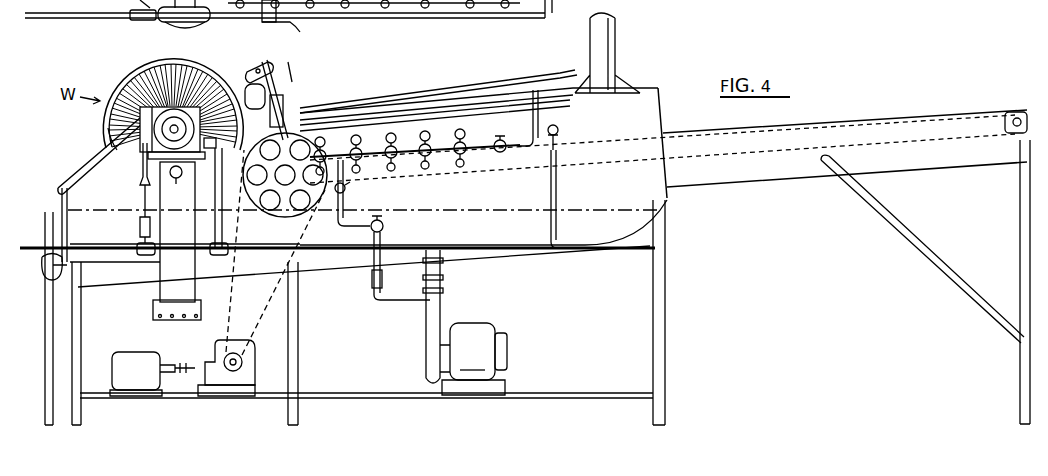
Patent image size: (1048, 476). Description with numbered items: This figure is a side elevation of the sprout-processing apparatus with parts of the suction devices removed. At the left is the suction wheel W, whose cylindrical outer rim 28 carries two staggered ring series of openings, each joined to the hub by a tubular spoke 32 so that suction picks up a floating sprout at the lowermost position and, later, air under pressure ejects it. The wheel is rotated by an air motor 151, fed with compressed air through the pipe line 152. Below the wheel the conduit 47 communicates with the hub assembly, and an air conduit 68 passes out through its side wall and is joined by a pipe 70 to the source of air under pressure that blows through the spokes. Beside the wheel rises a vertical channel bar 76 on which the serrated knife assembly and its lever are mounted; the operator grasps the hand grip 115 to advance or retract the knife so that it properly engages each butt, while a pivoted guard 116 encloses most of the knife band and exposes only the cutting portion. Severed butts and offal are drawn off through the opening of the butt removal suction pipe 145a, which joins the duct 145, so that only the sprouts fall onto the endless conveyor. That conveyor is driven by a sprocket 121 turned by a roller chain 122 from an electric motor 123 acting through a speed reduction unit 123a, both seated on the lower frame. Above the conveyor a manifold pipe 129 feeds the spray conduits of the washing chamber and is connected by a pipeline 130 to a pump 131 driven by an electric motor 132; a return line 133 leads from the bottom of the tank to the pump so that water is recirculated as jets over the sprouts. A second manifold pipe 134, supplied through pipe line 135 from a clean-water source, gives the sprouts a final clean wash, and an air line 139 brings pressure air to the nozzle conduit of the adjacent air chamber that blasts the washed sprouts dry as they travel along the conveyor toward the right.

The outer rim 28 is at (122, 76).
The tubular spoke 32 is at (105, 129).
The air motor 151 is at (148, 152).
The conduit 47 is at (185, 232).
The pipe line 152 is at (145, 195).
The conduit 68 is at (212, 143).
The channel bar 76 is at (272, 122).
The guard 116 is at (274, 61).
The stack / duct 145 is at (246, 80).
The hand grip 115 is at (304, 72).
The sprocket 121 is at (318, 110).
The butt removal suction pipe 145a is at (446, 68).
The pipe 70 is at (278, 175).
The manifold pipe 129 is at (348, 145).
The second manifold pipe 134 is at (445, 142).
The pipe line 135 is at (536, 92).
The air line 139 is at (556, 192).
The pipeline 130 is at (340, 212).
The return line 133 is at (444, 300).
The pump 131 is at (424, 348).
The electric motor 132 is at (488, 334).
The electric motor 123 is at (143, 360).
The speed reduction unit 123a is at (228, 350).
The roller chain 122 is at (280, 272).